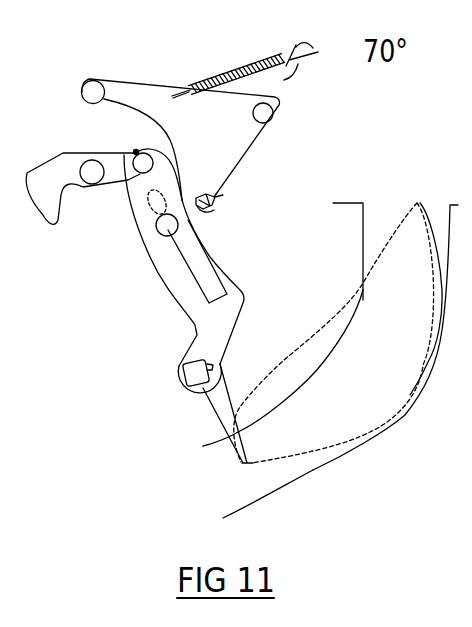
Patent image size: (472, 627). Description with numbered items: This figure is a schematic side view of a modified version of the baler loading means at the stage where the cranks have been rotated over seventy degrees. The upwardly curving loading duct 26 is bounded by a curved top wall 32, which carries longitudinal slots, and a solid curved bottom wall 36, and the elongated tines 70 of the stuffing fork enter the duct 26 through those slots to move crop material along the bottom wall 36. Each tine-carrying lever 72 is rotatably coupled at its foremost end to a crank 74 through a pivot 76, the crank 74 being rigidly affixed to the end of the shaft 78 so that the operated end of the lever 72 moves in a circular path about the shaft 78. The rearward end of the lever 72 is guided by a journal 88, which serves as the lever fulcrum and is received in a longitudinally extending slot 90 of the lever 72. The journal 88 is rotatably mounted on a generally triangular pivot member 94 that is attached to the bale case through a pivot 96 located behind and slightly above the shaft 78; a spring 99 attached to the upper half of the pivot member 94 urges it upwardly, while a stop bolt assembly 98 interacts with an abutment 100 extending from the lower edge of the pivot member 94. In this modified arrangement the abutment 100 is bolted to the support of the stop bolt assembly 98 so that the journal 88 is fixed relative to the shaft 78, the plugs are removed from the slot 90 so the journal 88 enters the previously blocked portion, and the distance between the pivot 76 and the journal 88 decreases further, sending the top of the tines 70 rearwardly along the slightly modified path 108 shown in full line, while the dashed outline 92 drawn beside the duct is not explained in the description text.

The loading duct 26 is at (213, 460).
The curved top wall 32 is at (362, 252).
The curved bottom wall 36 is at (265, 500).
The tines 70 is at (213, 397).
The lever 72 is at (200, 335).
The crank 74 is at (47, 220).
The pivot 76 is at (135, 152).
The shaft 78 is at (92, 182).
The journal 88 is at (201, 206).
The slot 90 is at (181, 266).
The boot sole outline 92 is at (291, 356).
The pivot member 94 is at (124, 88).
The pivot 96 is at (273, 111).
The stop bolt assembly 98 is at (207, 193).
The spring 99 is at (248, 66).
The abutment 100 is at (212, 209).
The modified path 108 is at (313, 470).